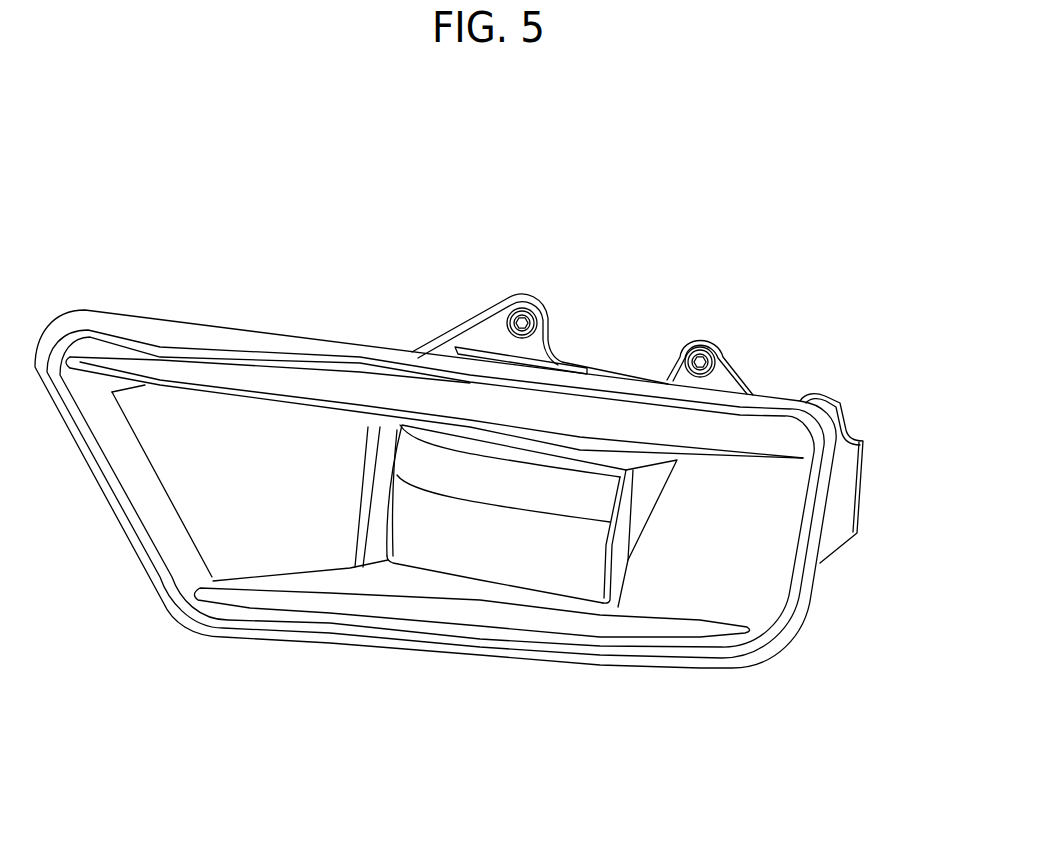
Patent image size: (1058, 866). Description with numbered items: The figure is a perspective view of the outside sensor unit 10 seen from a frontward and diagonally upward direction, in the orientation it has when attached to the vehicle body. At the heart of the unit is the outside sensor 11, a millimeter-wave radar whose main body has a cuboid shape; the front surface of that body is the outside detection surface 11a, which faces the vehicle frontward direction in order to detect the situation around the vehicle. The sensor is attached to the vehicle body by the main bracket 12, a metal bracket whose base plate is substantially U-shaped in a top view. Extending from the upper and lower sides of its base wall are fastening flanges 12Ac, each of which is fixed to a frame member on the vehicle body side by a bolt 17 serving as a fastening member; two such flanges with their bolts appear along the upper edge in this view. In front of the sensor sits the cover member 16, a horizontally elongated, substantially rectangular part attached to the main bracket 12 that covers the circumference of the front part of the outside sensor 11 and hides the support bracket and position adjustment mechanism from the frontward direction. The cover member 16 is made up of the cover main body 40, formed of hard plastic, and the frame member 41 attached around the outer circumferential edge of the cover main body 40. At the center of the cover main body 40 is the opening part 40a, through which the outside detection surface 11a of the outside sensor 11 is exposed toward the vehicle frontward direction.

The outside sensor unit 10 is at (670, 245).
The outside sensor 11 is at (466, 588).
The outside detection surface 11a is at (550, 593).
The main bracket 12 is at (870, 484).
The fastening flange 12Ac is at (483, 325).
The cover member 16 is at (262, 320).
The bolt 17 is at (523, 320).
The cover main body 40 is at (750, 598).
The opening part 40a is at (428, 575).
The frame member 41 is at (797, 615).